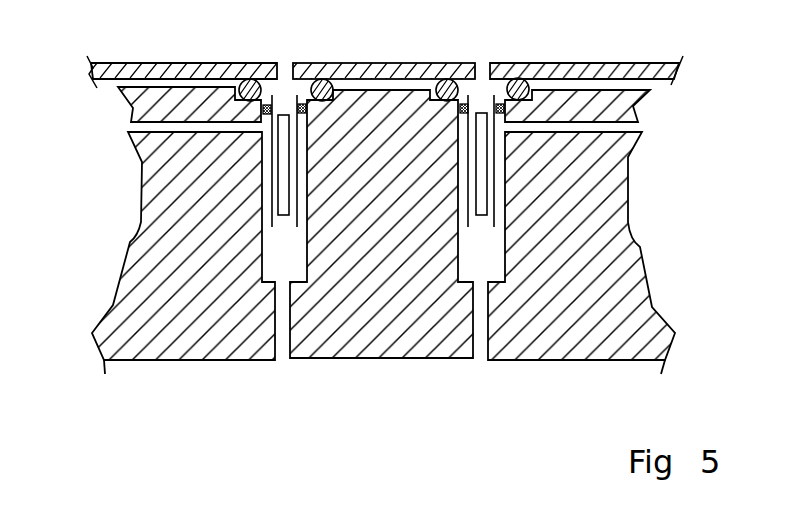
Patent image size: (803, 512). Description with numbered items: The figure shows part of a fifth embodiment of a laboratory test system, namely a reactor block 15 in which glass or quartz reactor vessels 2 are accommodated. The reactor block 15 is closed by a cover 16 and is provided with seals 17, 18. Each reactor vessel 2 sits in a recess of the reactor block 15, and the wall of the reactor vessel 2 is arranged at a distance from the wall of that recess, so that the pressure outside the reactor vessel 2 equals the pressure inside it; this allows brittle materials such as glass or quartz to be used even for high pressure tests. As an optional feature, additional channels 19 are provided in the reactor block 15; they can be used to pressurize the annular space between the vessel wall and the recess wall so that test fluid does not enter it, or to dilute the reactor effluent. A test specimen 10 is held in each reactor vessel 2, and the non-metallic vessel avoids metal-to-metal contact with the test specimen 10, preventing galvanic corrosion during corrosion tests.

The reactor vessel 2 is at (268, 228).
The test specimen 10 is at (283, 178).
The reactor block 15 is at (160, 220).
The cover 16 is at (423, 63).
The seal 17 is at (321, 88).
The seal 18 is at (302, 104).
The additional channel 19 is at (130, 126).